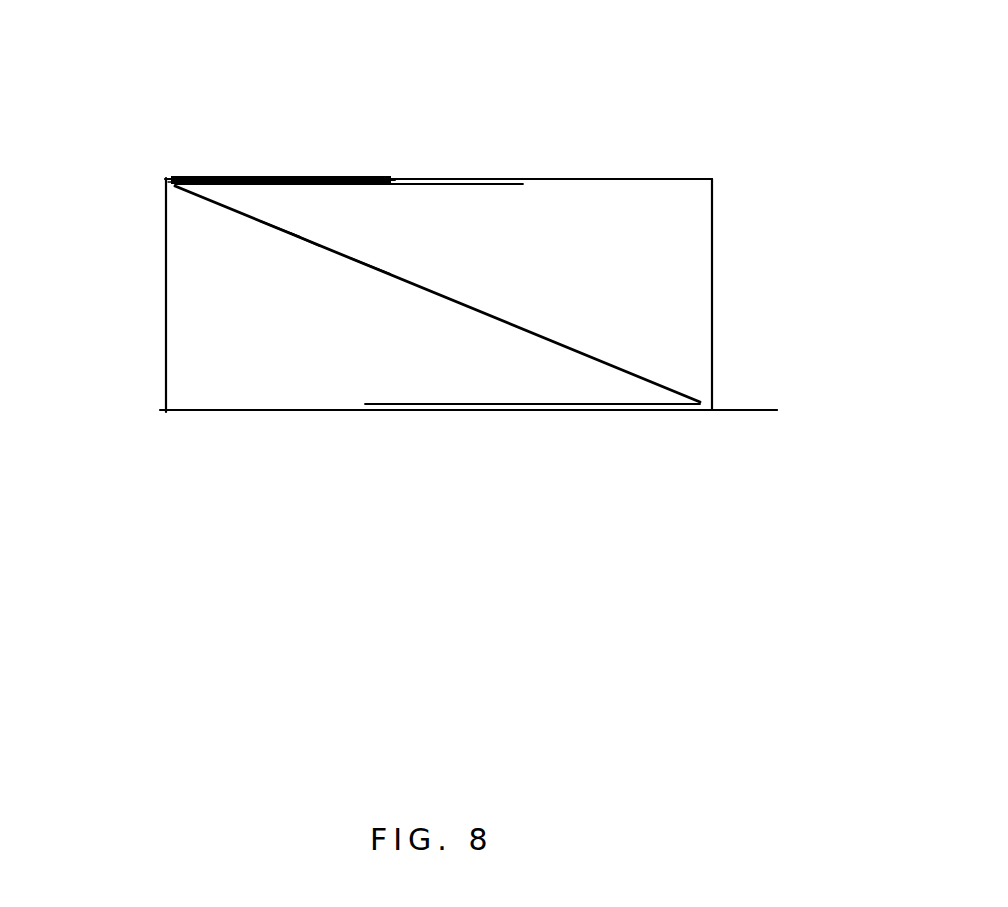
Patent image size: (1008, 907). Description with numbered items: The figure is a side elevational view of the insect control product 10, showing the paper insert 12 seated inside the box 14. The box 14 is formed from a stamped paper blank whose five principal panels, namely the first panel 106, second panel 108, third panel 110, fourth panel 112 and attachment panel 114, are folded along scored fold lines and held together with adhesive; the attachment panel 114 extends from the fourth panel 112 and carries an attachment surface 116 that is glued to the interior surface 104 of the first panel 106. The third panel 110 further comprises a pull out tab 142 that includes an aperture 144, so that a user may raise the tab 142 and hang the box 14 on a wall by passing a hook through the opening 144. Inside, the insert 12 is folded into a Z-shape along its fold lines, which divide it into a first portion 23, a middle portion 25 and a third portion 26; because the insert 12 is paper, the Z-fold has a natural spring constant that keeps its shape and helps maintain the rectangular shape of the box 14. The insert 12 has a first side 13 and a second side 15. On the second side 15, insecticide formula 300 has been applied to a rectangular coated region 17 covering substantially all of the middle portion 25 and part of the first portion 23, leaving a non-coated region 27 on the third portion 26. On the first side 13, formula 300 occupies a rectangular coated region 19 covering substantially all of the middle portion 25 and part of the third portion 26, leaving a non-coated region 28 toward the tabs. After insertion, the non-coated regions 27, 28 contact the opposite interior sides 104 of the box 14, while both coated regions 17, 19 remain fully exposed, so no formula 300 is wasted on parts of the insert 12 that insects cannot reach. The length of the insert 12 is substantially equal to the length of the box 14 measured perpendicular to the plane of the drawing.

The insect control product 10 is at (448, 175).
The insert 12 is at (496, 320).
The first side 13 is at (305, 238).
The box 14 is at (615, 178).
The second side 15 is at (278, 223).
The coated region 17 is at (426, 186).
The coated region 19 is at (430, 296).
The first portion 23 is at (320, 180).
The middle portion 25 is at (370, 266).
The third portion 26 is at (463, 410).
The non-coated region 27 is at (575, 410).
The non-coated region 28 is at (258, 180).
The interior surface 104 is at (592, 180).
The first panel 106 is at (530, 178).
The second panel 108 is at (713, 242).
The third panel 110 is at (331, 410).
The fourth panel 112 is at (160, 270).
The attachment panel 114 is at (237, 186).
The attachment surface 116 is at (213, 186).
The pull out tab 142 is at (765, 408).
The aperture 144 is at (735, 407).
The formula 300 is at (357, 189).